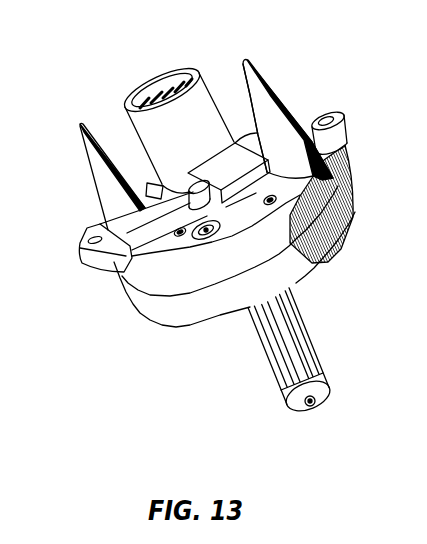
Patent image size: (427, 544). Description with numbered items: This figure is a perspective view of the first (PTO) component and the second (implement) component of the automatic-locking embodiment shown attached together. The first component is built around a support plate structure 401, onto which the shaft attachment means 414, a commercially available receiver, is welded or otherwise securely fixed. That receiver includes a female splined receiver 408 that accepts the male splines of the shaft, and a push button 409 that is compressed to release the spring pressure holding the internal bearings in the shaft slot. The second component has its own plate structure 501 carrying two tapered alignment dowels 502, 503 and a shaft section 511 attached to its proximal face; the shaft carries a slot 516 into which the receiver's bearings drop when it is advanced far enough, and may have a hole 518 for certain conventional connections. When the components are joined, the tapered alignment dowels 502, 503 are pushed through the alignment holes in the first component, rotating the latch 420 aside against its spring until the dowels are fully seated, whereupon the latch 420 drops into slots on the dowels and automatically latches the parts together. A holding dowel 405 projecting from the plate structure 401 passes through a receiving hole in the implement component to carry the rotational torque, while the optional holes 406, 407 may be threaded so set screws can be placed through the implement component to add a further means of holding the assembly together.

The support plate structure 401 is at (343, 183).
The holding dowel 405 is at (198, 240).
The optional hole 406 is at (147, 183).
The optional hole 407 is at (277, 197).
The female splined receiver 408 is at (245, 115).
The push button 409 is at (187, 235).
The shaft attachment means 414 is at (150, 80).
The latch 420 is at (155, 232).
The plate structure 501 is at (350, 210).
The tapered alignment dowel 502 is at (253, 63).
The tapered alignment dowel 503 is at (92, 193).
The shaft section 511 is at (317, 343).
The slot 516 is at (275, 395).
The hole 518 is at (320, 410).